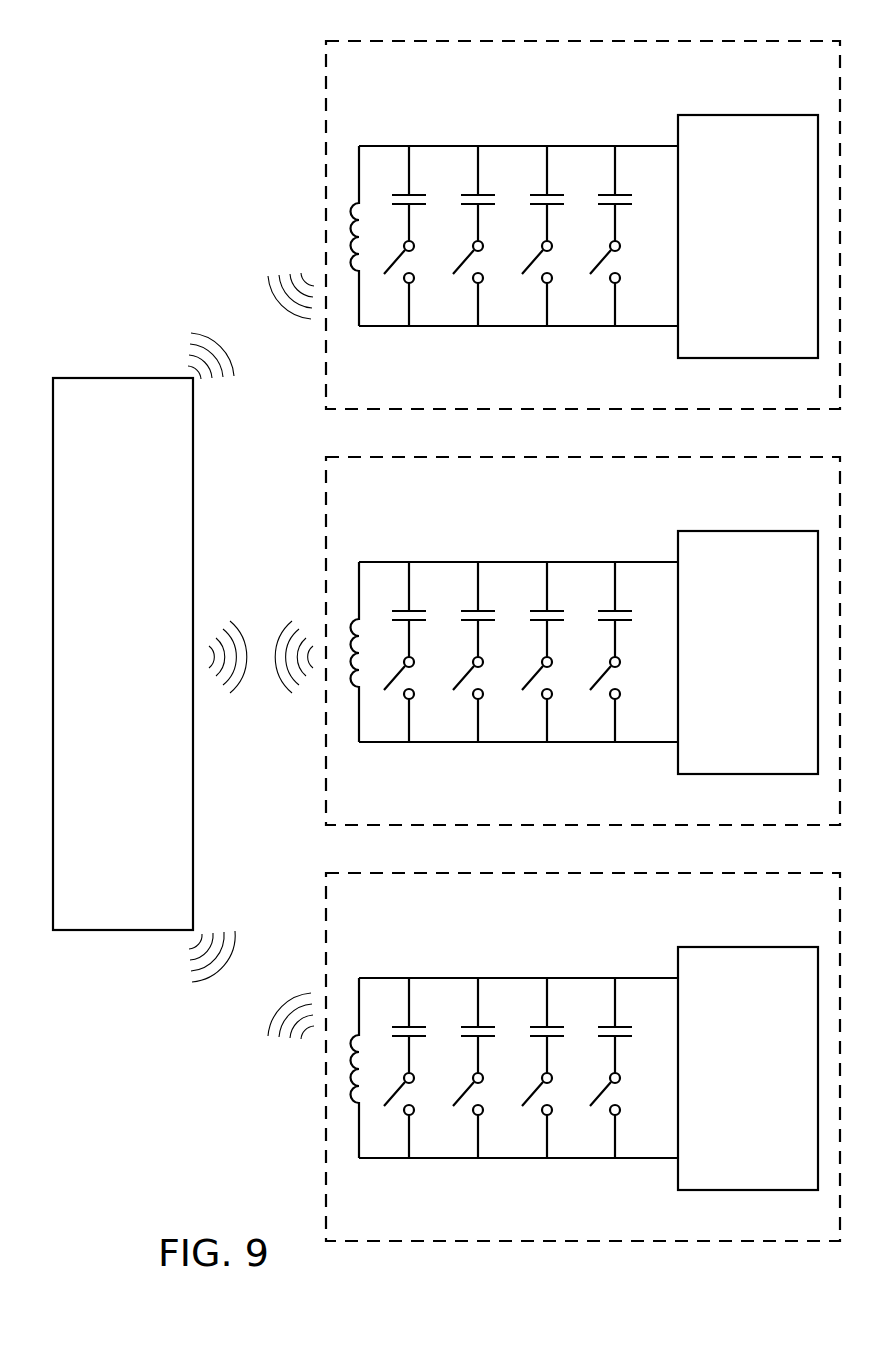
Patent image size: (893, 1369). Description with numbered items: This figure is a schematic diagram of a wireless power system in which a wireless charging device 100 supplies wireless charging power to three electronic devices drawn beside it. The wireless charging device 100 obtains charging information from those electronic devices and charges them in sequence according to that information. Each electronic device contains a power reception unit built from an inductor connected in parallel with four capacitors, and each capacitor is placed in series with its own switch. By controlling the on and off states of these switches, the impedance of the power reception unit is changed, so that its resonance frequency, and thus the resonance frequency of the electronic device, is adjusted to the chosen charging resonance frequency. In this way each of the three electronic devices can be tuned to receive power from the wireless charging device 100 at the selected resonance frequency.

The wireless charging device 100 is at (122, 377).